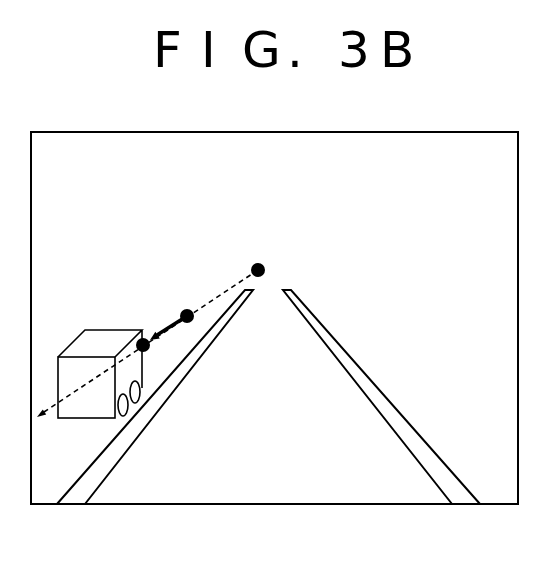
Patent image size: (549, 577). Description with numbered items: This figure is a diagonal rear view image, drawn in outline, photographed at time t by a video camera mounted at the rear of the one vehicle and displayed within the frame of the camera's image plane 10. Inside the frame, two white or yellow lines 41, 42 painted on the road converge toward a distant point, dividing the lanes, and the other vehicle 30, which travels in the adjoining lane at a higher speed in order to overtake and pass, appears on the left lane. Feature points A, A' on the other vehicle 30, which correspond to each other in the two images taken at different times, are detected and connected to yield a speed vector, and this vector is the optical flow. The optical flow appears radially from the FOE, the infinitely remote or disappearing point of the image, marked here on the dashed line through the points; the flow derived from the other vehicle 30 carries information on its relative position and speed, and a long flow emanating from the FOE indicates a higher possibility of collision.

The image plane 10 is at (135, 131).
The other vehicle 30 is at (105, 332).
The white or yellow line 41 is at (403, 437).
The white or yellow line 42 is at (122, 450).
The Focus of Expansion FOE is at (271, 260).
The feature point A is at (182, 283).
The corresponding feature point A' is at (145, 306).